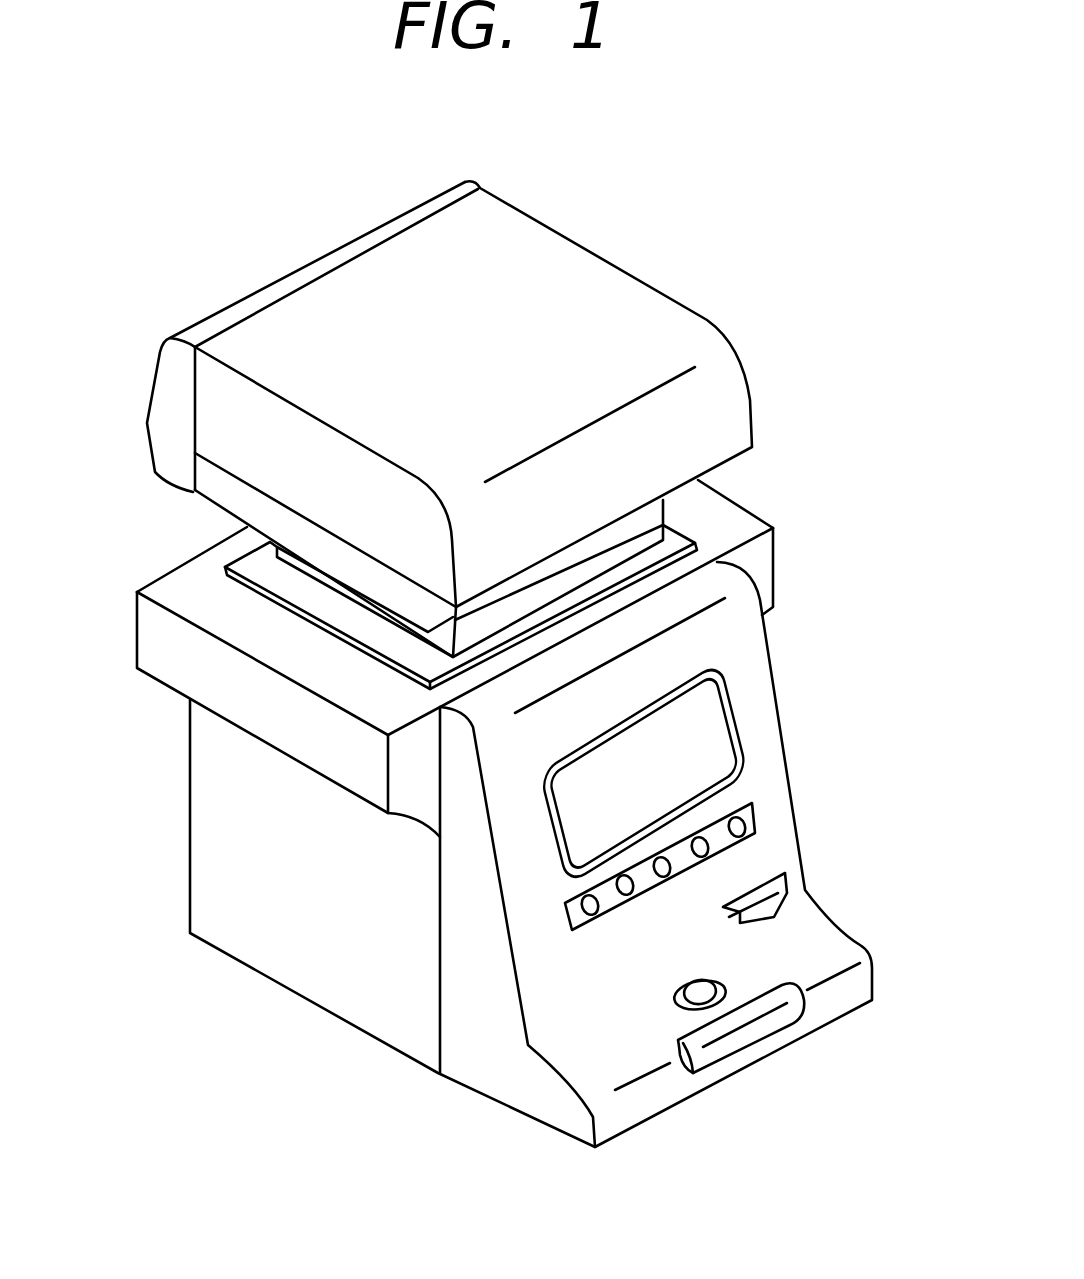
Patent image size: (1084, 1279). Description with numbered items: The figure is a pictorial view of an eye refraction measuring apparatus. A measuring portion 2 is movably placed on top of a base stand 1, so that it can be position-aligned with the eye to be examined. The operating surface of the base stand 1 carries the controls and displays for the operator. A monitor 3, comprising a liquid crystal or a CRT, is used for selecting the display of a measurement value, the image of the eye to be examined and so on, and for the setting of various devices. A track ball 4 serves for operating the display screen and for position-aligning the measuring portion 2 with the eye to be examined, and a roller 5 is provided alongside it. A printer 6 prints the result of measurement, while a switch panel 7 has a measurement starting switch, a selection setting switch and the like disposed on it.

The base stand 1 is at (357, 962).
The measuring portion 2 is at (568, 270).
The monitor 3 is at (697, 737).
The track ball 4 is at (693, 997).
The roller 5 is at (750, 1030).
The printer 6 is at (773, 905).
The switch panel 7 is at (753, 817).